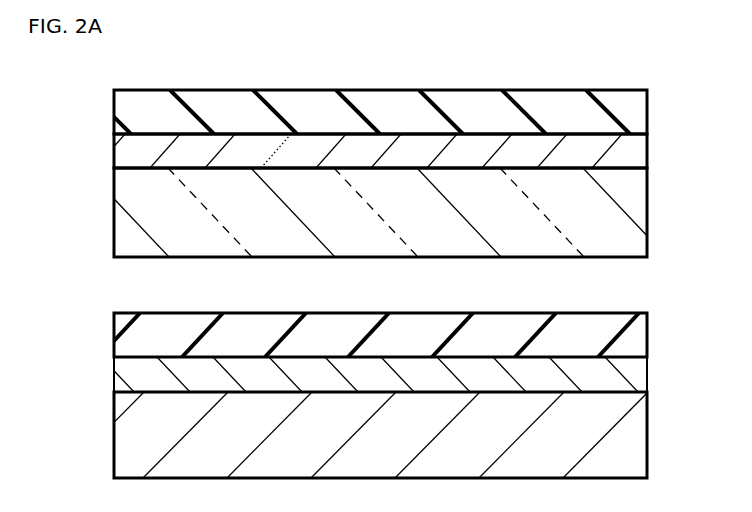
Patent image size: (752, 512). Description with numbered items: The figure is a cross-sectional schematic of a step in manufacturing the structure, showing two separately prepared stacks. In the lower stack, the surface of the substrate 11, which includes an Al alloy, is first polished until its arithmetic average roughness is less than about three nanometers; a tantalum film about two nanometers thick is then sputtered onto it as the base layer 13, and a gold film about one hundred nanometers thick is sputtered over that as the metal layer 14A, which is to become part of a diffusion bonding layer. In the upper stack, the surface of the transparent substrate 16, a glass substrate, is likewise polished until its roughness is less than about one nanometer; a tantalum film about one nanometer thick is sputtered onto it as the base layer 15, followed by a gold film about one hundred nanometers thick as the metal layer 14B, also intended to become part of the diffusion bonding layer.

The metal layer 14B is at (638, 113).
The base layer 15 is at (638, 153).
The transparent substrate 16 is at (638, 213).
The metal layer 14A is at (638, 334).
The base layer 13 is at (638, 374).
The substrate 11 is at (638, 434).